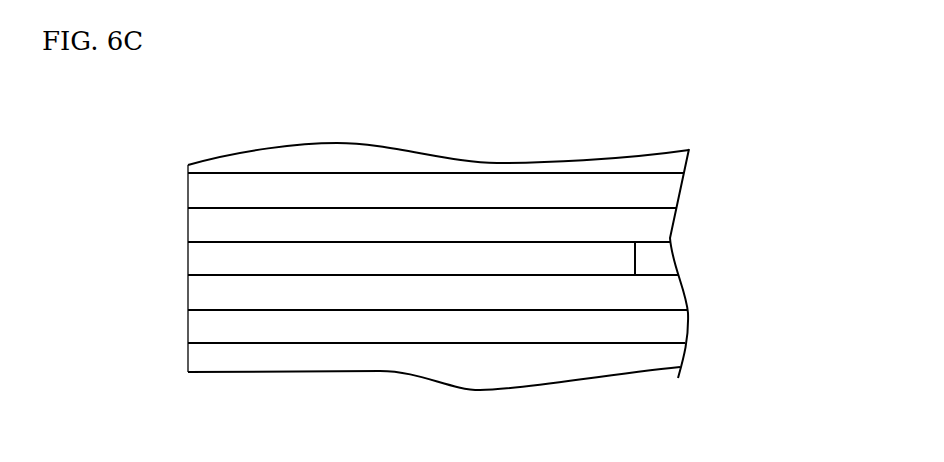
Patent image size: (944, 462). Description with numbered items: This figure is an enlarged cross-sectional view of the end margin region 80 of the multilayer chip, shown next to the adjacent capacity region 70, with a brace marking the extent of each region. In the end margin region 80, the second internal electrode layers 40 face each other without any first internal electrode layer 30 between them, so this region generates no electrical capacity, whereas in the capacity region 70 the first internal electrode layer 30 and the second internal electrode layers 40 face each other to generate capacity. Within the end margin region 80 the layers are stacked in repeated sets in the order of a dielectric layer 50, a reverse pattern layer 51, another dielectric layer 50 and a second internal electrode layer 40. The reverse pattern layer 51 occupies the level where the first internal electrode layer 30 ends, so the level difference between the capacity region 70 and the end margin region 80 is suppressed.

The end margin region 80 is at (636, 108).
The capacity region 70 is at (873, 103).
The second internal electrode layer 40 is at (655, 187).
The dielectric layer 50 is at (207, 233).
The reverse pattern layer 51 is at (208, 268).
The first internal electrode layer 30 is at (657, 259).